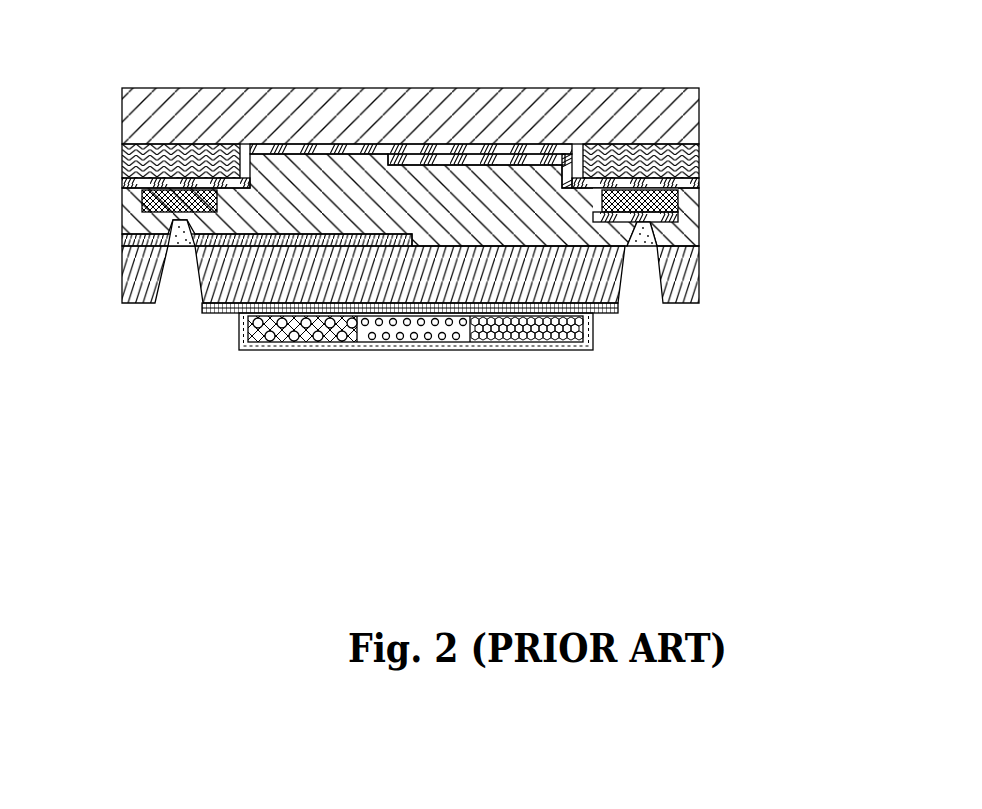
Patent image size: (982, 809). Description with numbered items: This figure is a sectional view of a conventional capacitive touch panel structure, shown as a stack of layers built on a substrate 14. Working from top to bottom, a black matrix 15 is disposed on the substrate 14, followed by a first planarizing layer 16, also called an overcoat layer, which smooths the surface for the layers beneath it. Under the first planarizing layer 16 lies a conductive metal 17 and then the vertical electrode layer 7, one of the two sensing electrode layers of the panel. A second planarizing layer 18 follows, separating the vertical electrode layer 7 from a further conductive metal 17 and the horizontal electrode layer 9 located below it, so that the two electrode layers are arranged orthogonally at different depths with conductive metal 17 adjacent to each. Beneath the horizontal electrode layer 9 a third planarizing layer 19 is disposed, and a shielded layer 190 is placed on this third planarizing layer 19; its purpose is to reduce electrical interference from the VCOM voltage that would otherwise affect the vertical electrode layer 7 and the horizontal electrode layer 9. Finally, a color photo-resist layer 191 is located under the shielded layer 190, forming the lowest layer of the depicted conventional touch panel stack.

The vertical electrode layer 7 is at (700, 213).
The horizontal electrode layer 9 is at (122, 240).
The substrate 14 is at (642, 105).
The black matrix 15 is at (699, 152).
The first planarizing layer 16 is at (700, 184).
The conductive metal 17 is at (122, 198).
The second planarizing layer 18 is at (700, 230).
The third planarizing layer 19 is at (610, 275).
The shielded layer 190 is at (610, 312).
The color photo-resist layer 191 is at (533, 335).